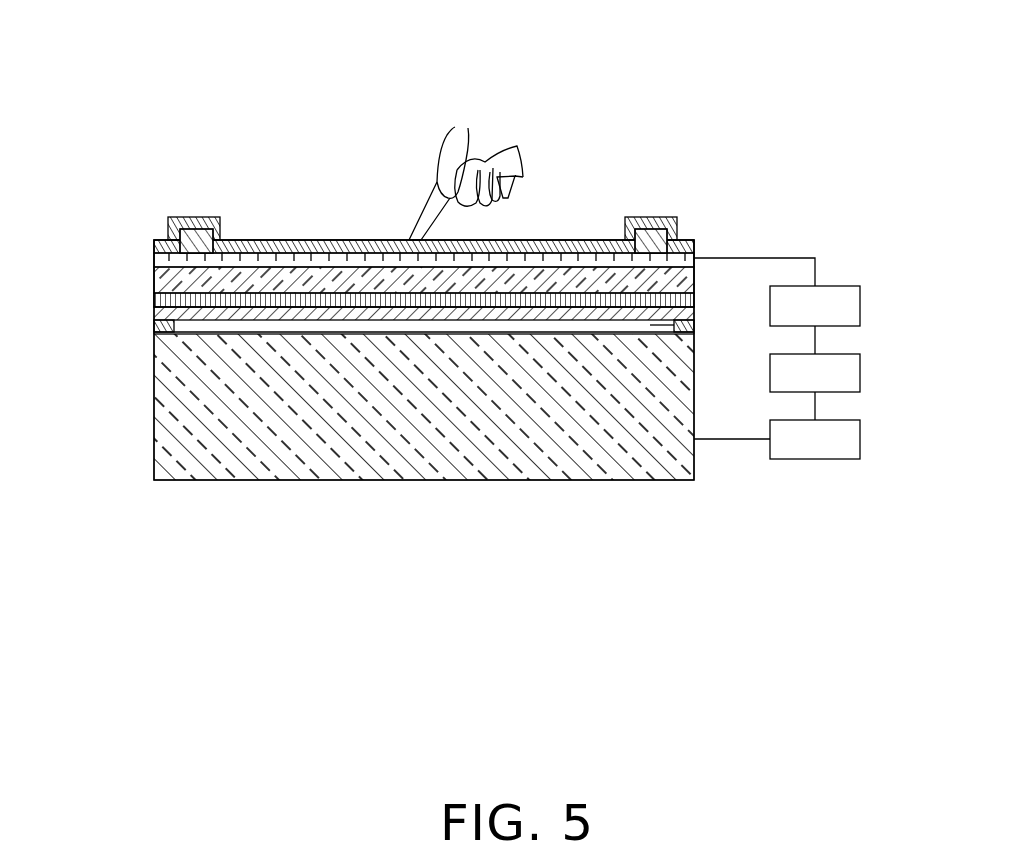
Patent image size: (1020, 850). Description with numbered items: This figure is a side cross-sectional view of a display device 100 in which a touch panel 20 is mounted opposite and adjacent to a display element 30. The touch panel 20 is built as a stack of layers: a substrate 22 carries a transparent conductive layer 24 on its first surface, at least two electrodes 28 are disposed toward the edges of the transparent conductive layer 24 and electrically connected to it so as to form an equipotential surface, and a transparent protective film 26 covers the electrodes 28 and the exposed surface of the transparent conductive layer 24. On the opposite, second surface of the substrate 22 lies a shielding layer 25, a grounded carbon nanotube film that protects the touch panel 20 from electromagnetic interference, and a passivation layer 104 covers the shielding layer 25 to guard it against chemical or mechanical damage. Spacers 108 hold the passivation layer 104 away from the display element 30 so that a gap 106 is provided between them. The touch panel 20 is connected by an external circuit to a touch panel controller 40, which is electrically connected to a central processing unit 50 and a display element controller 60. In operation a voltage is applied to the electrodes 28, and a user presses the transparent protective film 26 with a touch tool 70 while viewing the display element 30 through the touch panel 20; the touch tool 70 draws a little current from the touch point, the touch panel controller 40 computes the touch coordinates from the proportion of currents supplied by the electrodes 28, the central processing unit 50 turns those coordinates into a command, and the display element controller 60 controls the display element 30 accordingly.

The display device 100 is at (488, 25).
The touch panel 20 is at (71, 221).
The transparent protective film 26 is at (153, 246).
The transparent conductive layer 24 is at (153, 259).
The substrate 22 is at (153, 281).
The shielding layer 25 is at (153, 301).
The passivation layer 104 is at (153, 313).
The spacer 108 is at (156, 324).
The gap 106 is at (695, 329).
The display element 30 is at (175, 402).
The electrode 28 is at (660, 217).
The touch tool 70 is at (445, 158).
The touch panel controller 40 is at (860, 305).
The central processing unit 50 is at (860, 372).
The display element controller 60 is at (860, 440).